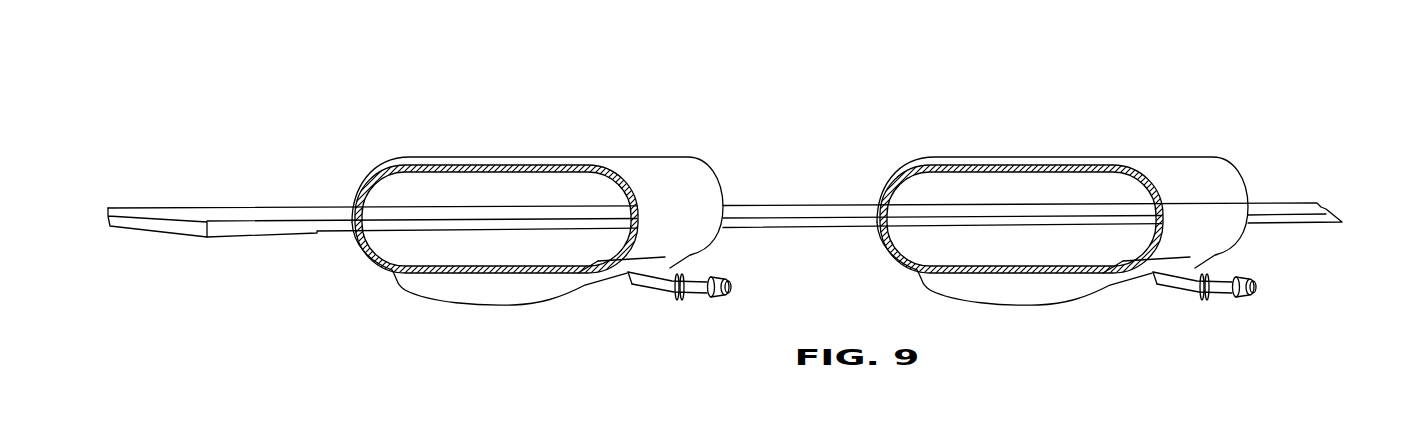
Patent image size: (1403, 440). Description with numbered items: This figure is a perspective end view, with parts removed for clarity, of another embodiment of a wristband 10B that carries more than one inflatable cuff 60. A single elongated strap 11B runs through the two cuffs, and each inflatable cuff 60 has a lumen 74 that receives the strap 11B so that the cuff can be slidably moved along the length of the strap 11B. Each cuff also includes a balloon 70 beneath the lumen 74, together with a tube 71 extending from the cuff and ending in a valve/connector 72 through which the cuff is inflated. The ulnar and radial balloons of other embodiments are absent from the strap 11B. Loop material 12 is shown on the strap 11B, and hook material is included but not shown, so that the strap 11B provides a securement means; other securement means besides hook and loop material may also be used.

The wristband 10B is at (773, 104).
The strap 11B is at (787, 205).
The loop material 12 is at (247, 238).
The inflatable cuff 60 is at (577, 155).
The balloon 70 is at (497, 293).
The tube 71 is at (690, 297).
The valve/connector 72 is at (718, 273).
The lumen 74 is at (418, 194).